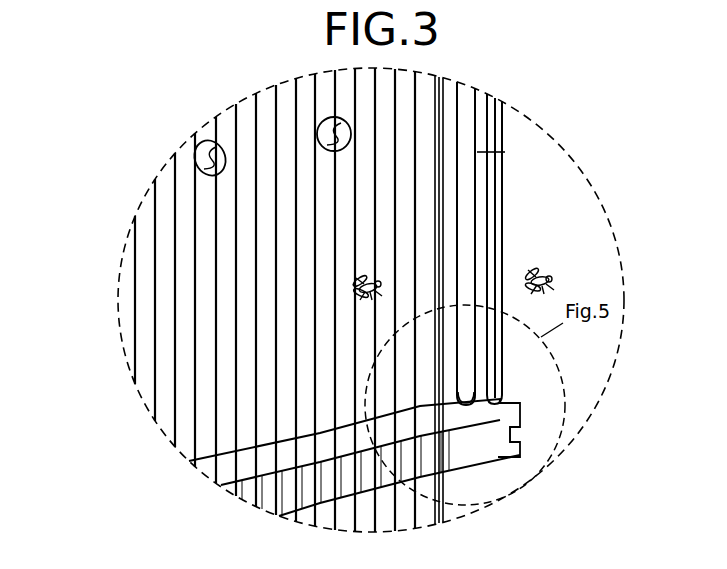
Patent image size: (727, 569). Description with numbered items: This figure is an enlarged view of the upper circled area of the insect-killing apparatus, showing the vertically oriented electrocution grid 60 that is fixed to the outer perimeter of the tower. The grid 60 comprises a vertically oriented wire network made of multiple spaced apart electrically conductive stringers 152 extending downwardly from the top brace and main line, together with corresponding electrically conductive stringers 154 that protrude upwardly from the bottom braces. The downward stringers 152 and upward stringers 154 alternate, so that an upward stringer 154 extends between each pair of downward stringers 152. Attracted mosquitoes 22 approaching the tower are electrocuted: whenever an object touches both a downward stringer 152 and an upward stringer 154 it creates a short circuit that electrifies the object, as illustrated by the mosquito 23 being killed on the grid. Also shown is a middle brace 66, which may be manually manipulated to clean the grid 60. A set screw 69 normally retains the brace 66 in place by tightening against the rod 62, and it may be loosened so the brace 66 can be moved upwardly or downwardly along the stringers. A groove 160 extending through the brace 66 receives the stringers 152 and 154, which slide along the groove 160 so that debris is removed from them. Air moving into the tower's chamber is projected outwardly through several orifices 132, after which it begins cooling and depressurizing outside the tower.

The electrocution grid 60 is at (147, 382).
The orifices 132 is at (318, 131).
The electrically conductive stringers 152 is at (505, 154).
The electrically conductive stringers 154 is at (495, 184).
The mosquito 23 is at (366, 275).
The mosquitoes 22 is at (547, 285).
The rod 62 is at (480, 384).
The middle brace 66 is at (523, 404).
The set screw 69 is at (521, 434).
The groove 160 is at (467, 433).